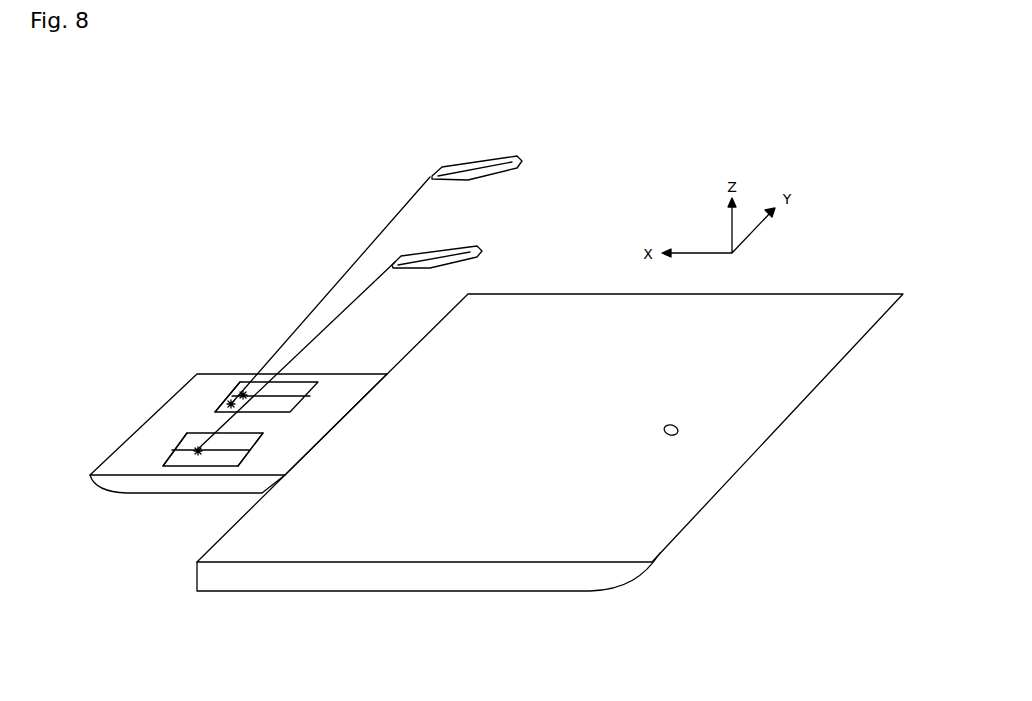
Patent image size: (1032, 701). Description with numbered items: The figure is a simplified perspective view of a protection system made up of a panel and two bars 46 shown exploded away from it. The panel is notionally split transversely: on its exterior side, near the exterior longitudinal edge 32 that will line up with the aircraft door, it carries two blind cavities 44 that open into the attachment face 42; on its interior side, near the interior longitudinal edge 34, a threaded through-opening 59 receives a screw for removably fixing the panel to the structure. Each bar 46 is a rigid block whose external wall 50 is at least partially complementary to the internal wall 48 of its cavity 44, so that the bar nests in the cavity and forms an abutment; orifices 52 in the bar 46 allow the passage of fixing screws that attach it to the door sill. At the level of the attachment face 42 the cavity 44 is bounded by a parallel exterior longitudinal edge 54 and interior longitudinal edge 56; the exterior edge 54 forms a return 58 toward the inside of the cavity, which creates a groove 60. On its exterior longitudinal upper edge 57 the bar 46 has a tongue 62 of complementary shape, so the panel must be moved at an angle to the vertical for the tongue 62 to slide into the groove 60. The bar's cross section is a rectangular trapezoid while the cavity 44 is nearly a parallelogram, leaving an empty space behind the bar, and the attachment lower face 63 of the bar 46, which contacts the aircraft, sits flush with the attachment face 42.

The exterior longitudinal edge 32 is at (193, 378).
The interior longitudinal edge 34 is at (550, 473).
The attachment face 42 is at (430, 543).
The cavity 44 is at (200, 455).
The bar 46 is at (382, 267).
The internal wall 48 is at (173, 455).
The external wall 50 is at (498, 132).
The orifice 52 is at (470, 160).
The exterior longitudinal edge of cavity 54 is at (170, 452).
The interior longitudinal edge of cavity 56 is at (307, 397).
The exterior longitudinal upper edge 57 is at (469, 132).
The return 58 is at (227, 396).
The threaded through-opening 59 is at (678, 435).
The groove 60 is at (217, 418).
The tongue 62 is at (498, 132).
The attachment lower face 63 is at (437, 260).